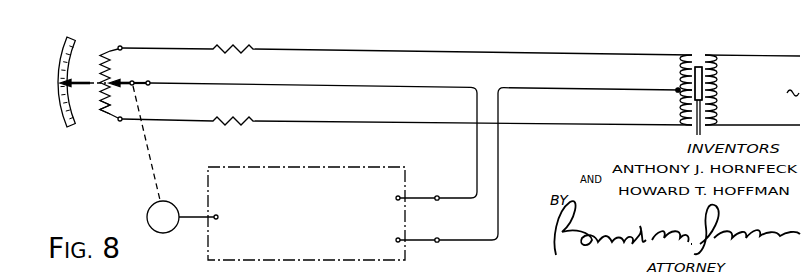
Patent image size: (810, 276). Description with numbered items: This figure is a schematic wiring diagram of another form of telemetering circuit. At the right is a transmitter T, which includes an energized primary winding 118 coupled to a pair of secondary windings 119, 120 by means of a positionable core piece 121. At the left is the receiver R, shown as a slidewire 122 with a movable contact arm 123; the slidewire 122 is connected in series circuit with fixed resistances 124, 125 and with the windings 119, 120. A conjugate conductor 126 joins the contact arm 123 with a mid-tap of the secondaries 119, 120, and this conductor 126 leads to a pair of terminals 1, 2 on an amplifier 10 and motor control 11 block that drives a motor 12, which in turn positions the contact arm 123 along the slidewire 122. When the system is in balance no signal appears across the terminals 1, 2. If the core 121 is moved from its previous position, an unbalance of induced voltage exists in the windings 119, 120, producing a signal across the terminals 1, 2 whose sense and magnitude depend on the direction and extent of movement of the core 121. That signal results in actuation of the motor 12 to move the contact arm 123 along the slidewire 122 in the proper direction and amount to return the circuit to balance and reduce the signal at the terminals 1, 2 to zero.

The receiver R is at (112, 74).
The transmitter T is at (696, 85).
The terminal 1 is at (437, 196).
The terminal 2 is at (437, 238).
The amplifier 10 is at (360, 202).
The motor control 11 is at (381, 251).
The motor 12 is at (170, 202).
The primary winding 118 is at (718, 80).
The secondary winding 119 is at (678, 71).
The secondary winding 120 is at (678, 104).
The core piece 121 is at (698, 67).
The slidewire 122 is at (110, 108).
The contact arm 123 is at (137, 82).
The fixed resistance 124 is at (241, 53).
The fixed resistance 125 is at (238, 117).
The conjugate conductor 126 is at (446, 86).